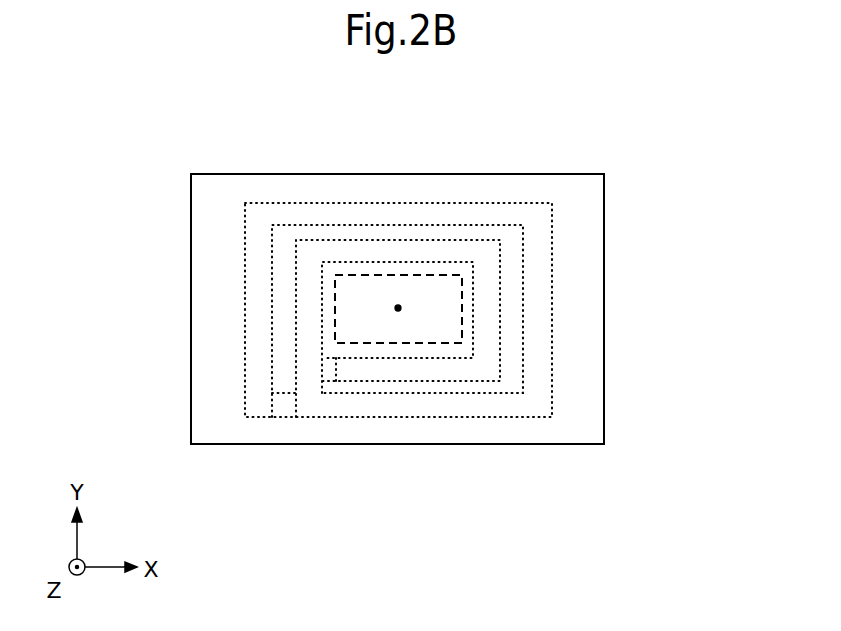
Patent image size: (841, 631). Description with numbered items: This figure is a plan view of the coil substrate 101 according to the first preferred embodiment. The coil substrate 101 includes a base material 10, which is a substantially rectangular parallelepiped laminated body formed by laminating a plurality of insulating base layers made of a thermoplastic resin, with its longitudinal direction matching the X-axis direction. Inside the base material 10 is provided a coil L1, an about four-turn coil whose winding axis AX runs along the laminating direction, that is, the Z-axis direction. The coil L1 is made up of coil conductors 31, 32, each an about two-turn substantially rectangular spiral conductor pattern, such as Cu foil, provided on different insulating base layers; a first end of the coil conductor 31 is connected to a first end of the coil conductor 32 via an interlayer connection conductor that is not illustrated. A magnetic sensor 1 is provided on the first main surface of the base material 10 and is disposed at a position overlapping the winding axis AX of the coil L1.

The coil substrate 101 is at (690, 81).
The base material 10 is at (604, 174).
The winding axis AX is at (398, 308).
The magnetic sensor 1 is at (462, 348).
The coil conductor 31 is at (336, 393).
The coil conductor 32 is at (388, 417).
The coil L1 is at (398, 388).